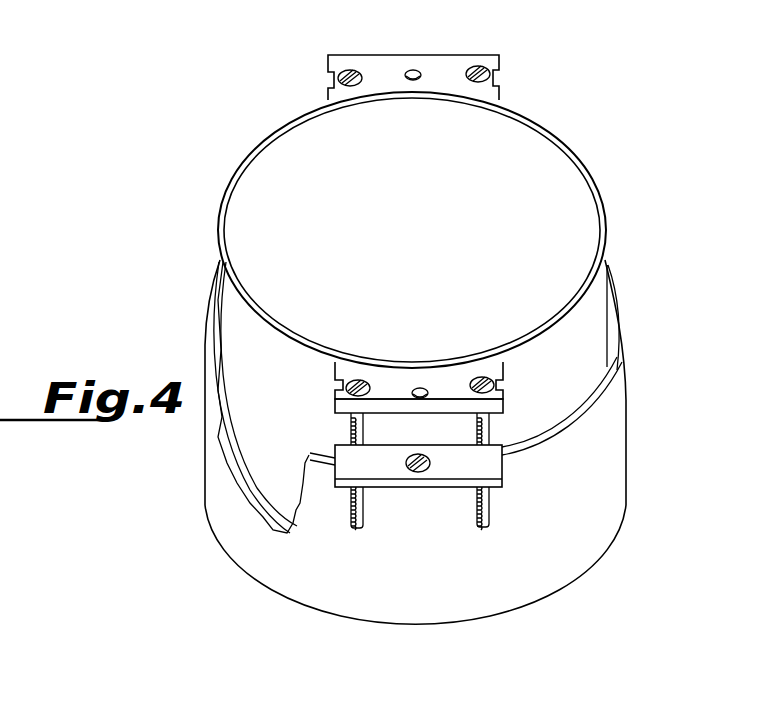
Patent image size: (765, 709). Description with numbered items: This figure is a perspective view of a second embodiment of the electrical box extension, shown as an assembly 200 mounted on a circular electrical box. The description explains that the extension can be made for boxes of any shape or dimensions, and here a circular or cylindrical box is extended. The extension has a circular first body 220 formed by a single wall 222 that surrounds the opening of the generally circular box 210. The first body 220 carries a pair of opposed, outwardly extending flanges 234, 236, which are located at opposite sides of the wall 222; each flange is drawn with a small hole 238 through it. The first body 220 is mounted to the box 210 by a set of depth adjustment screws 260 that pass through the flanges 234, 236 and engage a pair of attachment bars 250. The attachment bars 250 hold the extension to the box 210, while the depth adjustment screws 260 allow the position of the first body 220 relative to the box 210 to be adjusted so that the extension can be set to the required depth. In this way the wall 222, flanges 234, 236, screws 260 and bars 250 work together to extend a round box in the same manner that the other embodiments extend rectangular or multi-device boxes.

The bucket holder assembly 200 is at (560, 110).
The circular box 210 is at (550, 562).
The first body 220 is at (268, 146).
The single wall 222 is at (219, 258).
The flange 234 is at (391, 378).
The flange 236 is at (460, 62).
The hole 238 is at (417, 70).
The attachment bar 250 is at (394, 467).
The depth adjustment screw 260 is at (352, 512).